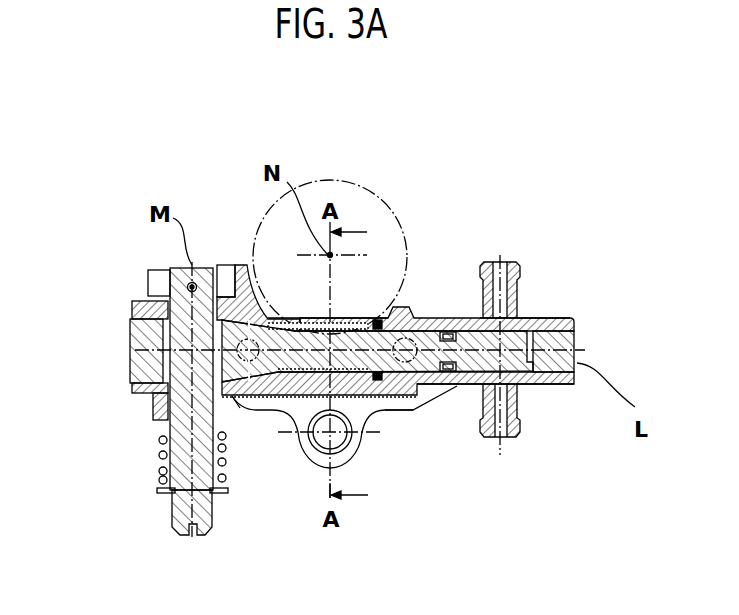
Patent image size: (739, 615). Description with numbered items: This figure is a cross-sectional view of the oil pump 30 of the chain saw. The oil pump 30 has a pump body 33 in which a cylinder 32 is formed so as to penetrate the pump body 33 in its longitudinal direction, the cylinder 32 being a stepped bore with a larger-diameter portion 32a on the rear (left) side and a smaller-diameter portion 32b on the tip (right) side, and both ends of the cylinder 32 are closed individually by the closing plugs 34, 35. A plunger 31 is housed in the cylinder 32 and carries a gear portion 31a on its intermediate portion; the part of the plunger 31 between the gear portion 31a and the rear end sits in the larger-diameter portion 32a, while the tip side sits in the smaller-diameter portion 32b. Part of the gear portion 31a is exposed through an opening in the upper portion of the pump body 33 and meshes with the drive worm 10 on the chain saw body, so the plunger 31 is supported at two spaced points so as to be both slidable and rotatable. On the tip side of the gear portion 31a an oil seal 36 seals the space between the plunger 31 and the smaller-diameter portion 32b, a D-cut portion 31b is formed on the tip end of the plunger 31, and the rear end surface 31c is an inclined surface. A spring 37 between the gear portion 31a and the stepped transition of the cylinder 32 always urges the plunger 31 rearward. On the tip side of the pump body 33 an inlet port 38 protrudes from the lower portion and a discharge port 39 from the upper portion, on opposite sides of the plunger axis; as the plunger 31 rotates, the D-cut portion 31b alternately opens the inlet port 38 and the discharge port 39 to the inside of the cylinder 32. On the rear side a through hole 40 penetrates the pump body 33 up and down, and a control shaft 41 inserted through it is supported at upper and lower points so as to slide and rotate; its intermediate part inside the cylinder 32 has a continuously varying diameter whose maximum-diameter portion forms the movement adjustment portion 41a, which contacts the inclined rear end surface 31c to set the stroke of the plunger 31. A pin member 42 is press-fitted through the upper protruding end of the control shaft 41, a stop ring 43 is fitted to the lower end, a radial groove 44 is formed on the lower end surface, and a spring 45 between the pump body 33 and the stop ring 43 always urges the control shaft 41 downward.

The drive worm 10 is at (315, 181).
The oil pump 30 is at (109, 234).
The plunger 31 is at (389, 311).
The gear portion 31a is at (288, 318).
The D-cut portion 31b is at (527, 384).
The rear end surface 31c is at (212, 264).
The cylinder 32 is at (359, 452).
The larger-diameter portion 32a is at (390, 367).
The smaller-diameter portion 32b is at (473, 367).
The pump body 33 is at (550, 317).
The closing plug 34 is at (130, 334).
The closing plug 35 is at (574, 350).
The oil seal 36 is at (446, 319).
The spring 37 is at (384, 320).
The inlet port 38 is at (495, 440).
The discharge port 39 is at (502, 262).
The through hole 40 is at (168, 398).
The control shaft 41 is at (150, 286).
The movement adjustment portion 41a is at (237, 408).
The pin member 42 is at (168, 268).
The stop ring 43 is at (158, 493).
The groove 44 is at (192, 535).
The spring 45 is at (158, 455).